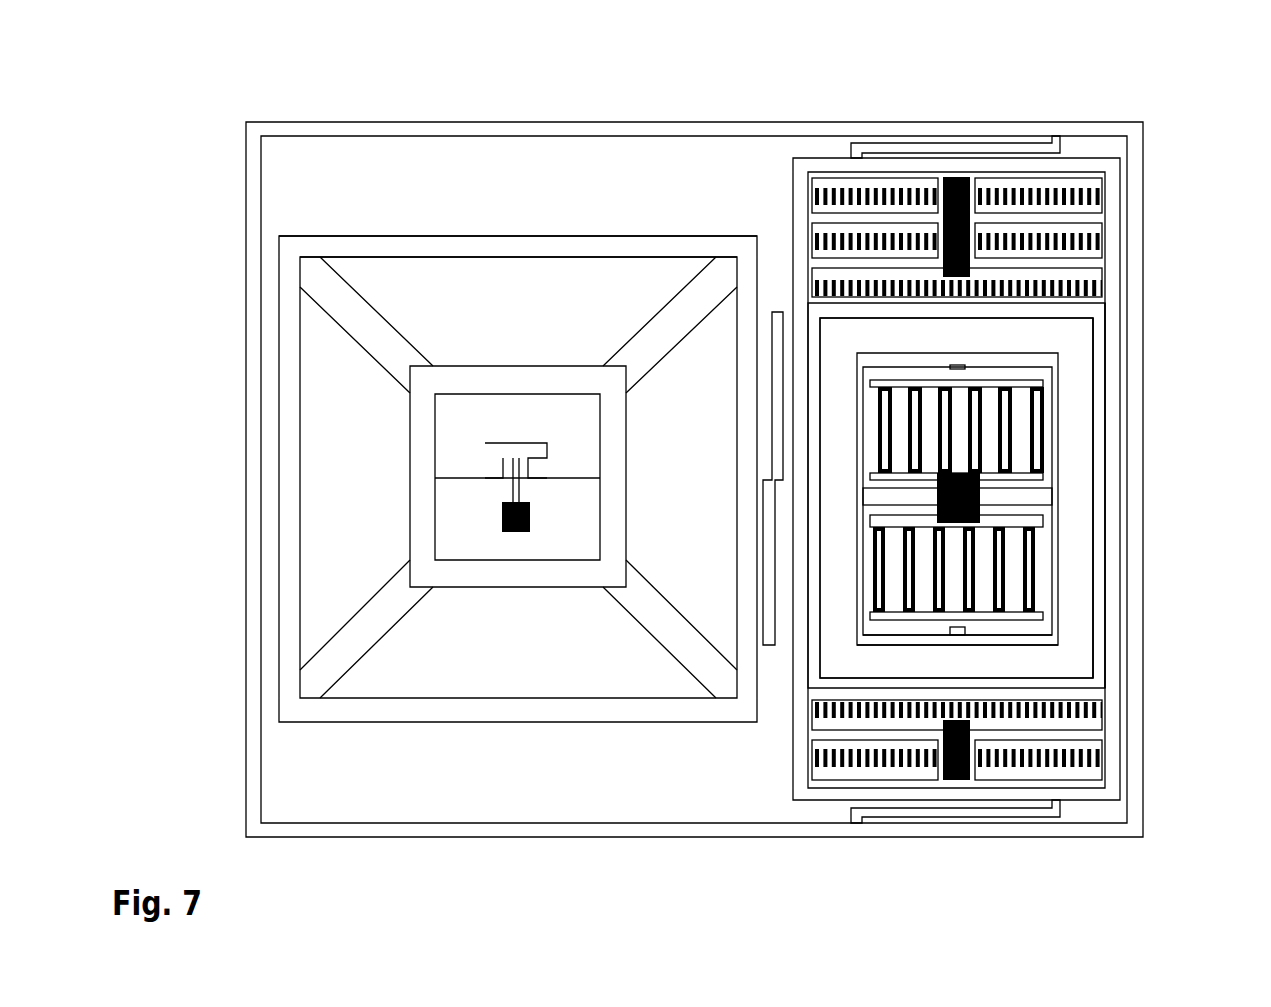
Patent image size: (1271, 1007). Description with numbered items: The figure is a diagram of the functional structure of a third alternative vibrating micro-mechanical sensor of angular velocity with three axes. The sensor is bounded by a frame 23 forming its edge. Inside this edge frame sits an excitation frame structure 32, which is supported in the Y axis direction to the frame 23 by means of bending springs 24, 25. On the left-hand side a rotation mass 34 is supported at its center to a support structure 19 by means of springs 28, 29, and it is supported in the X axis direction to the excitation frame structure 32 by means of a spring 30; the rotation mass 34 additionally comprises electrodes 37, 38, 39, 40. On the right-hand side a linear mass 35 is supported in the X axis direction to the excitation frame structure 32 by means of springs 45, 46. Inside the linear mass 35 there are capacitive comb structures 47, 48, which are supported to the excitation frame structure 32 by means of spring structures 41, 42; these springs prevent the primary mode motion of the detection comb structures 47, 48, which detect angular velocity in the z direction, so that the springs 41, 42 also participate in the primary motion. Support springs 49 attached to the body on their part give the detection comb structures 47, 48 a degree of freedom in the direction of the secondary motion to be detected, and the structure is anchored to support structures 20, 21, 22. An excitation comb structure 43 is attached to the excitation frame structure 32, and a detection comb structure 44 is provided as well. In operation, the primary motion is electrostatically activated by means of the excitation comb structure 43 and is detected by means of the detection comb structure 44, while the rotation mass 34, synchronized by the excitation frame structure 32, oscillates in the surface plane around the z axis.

The support structure 19 is at (530, 515).
The support structure 20 is at (973, 240).
The support structure 21 is at (977, 482).
The support structure 22 is at (970, 757).
The frame 23 is at (887, 122).
The bending spring 24 is at (957, 143).
The bending spring 25 is at (1060, 805).
The spring 28 is at (524, 458).
The spring 29 is at (450, 477).
The spring 30 is at (782, 311).
The excitation frame structure 32 is at (1082, 158).
The rotation mass 34 is at (690, 236).
The linear mass 35 is at (1093, 535).
The electrode 37 is at (385, 256).
The electrode 38 is at (463, 587).
The electrode 39 is at (315, 300).
The electrode 40 is at (723, 298).
The spring structure 41 is at (1017, 362).
The spring structure 42 is at (1017, 633).
The excitation comb structure 43 is at (1017, 220).
The detection comb structure 44 is at (1050, 740).
The spring 45 is at (817, 333).
The spring 46 is at (1102, 662).
The capacitive comb structure 47 is at (953, 418).
The capacitive comb structure 48 is at (977, 580).
The support spring 49 is at (1017, 492).